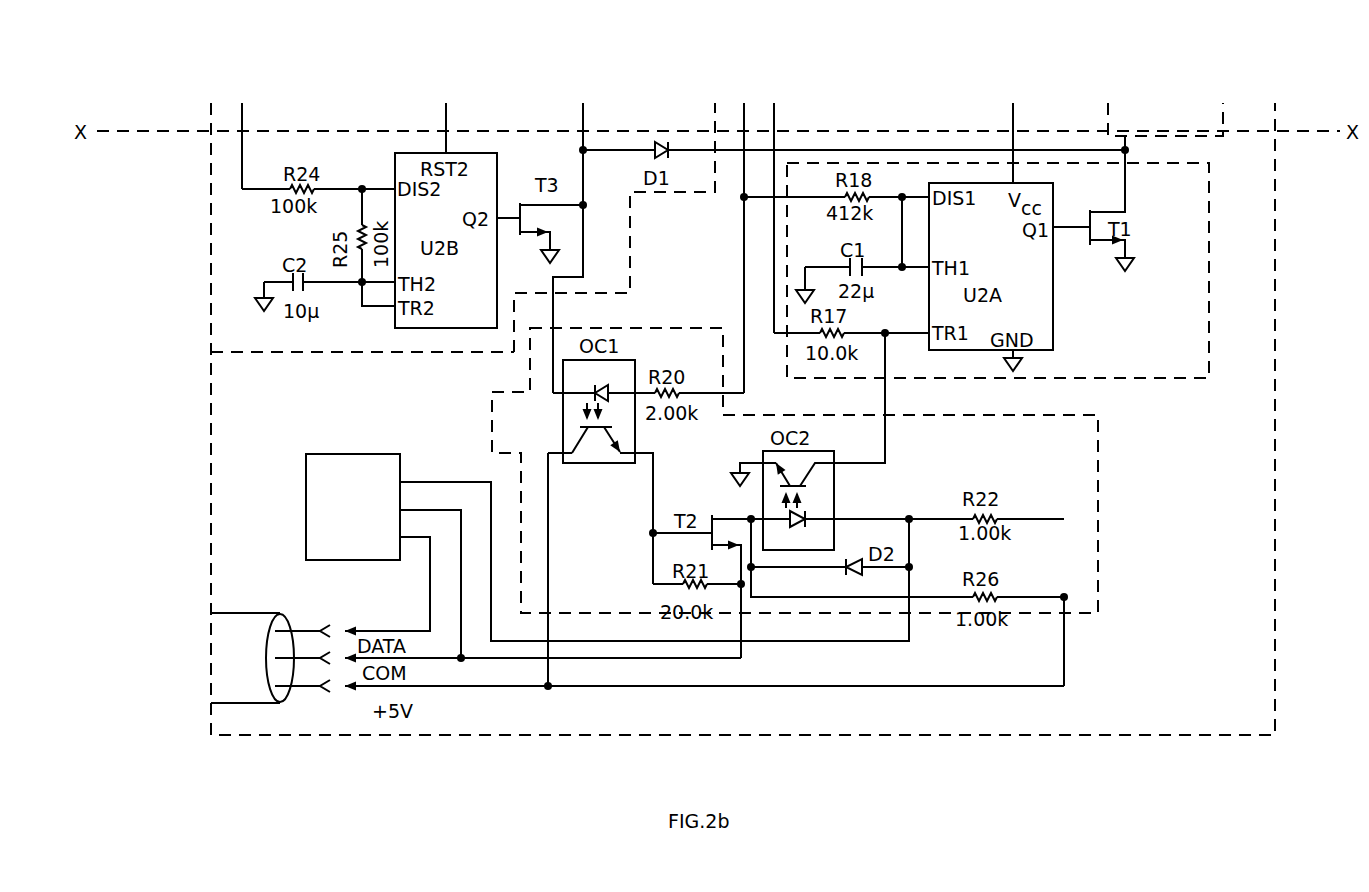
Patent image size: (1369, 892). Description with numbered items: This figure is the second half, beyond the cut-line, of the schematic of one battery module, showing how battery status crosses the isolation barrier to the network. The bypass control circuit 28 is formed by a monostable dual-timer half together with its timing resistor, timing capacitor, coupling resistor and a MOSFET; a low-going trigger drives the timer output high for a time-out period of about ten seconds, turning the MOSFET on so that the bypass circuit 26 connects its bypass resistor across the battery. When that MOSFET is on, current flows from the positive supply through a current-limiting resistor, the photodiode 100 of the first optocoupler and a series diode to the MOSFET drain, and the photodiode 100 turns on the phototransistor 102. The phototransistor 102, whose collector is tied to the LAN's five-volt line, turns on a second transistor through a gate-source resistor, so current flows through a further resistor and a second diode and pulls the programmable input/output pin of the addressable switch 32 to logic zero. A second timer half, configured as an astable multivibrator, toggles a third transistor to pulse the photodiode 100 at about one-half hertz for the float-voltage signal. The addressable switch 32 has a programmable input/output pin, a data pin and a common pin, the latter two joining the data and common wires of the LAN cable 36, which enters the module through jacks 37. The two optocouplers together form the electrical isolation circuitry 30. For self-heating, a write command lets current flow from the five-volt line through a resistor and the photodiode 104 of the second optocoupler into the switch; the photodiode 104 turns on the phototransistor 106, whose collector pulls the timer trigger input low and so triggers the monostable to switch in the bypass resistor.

The bypass circuit 26 is at (1205, 138).
The bypass control circuit 28 is at (1143, 378).
The electrical isolation circuitry 30 is at (1098, 515).
The addressable switch 32 is at (306, 509).
The local area network cable 36 is at (231, 613).
The jacks 37 is at (344, 627).
The photodiode 100 is at (608, 388).
The phototransistor 102 is at (584, 424).
The photodiode 104 is at (806, 519).
The phototransistor 106 is at (806, 488).